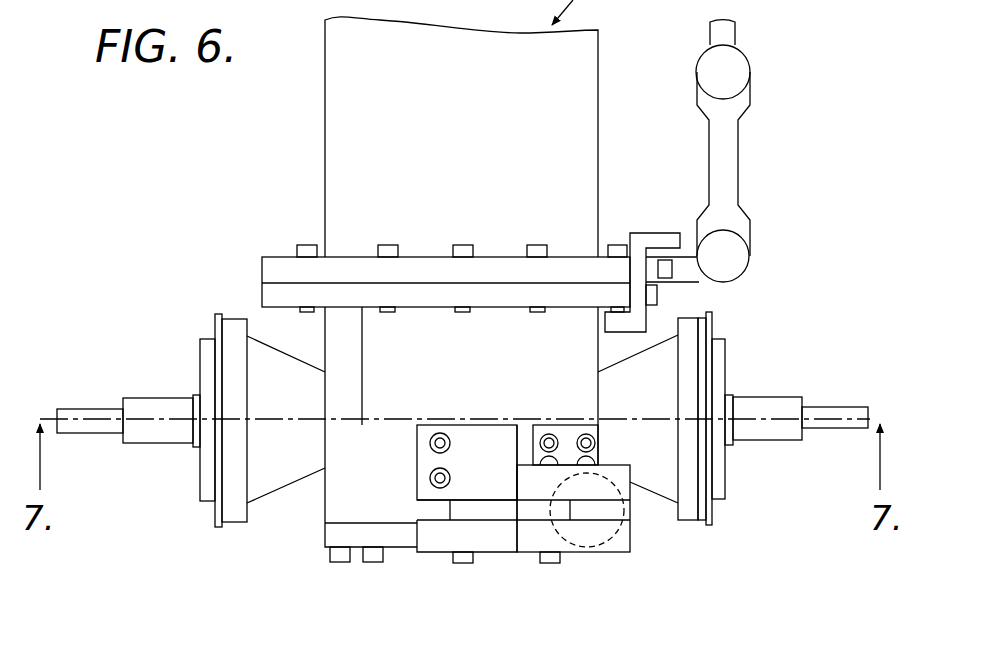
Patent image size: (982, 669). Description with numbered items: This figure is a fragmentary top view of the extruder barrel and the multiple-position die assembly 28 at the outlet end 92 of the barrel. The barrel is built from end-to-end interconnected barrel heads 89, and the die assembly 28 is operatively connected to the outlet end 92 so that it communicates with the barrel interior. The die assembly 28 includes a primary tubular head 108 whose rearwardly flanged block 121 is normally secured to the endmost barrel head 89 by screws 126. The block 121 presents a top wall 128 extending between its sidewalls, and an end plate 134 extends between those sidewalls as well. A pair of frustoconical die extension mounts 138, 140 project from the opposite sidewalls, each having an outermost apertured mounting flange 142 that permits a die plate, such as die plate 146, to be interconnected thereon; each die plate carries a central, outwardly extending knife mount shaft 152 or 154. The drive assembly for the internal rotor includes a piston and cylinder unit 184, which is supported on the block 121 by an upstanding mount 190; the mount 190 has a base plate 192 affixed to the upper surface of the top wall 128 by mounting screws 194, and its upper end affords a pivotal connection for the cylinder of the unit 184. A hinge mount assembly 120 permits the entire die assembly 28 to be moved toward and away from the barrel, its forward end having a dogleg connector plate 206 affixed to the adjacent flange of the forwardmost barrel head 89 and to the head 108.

The die assembly 28 is at (778, 545).
The barrel head 89 is at (340, 130).
The outlet end 92 is at (283, 268).
The primary tubular head 108 is at (323, 522).
The hinge mount assembly 120 is at (757, 128).
The rearwardly flanged block 121 is at (362, 333).
The screws 126 is at (462, 250).
The top wall 128 is at (461, 434).
The end plate 134 is at (402, 541).
The frustoconical die extension mount 138 is at (262, 490).
The frustoconical die extension mount 140 is at (660, 480).
The apertured mounting flange 142 is at (238, 325).
The die plate 146 is at (718, 352).
The knife mount shaft 152 is at (155, 400).
The knife mount shaft 154 is at (787, 400).
The piston and cylinder unit 184 is at (607, 545).
The upstanding mount 190 is at (540, 540).
The base plate 192 is at (478, 437).
The mounting screws 194 is at (430, 443).
The dogleg connector plate 206 is at (646, 240).